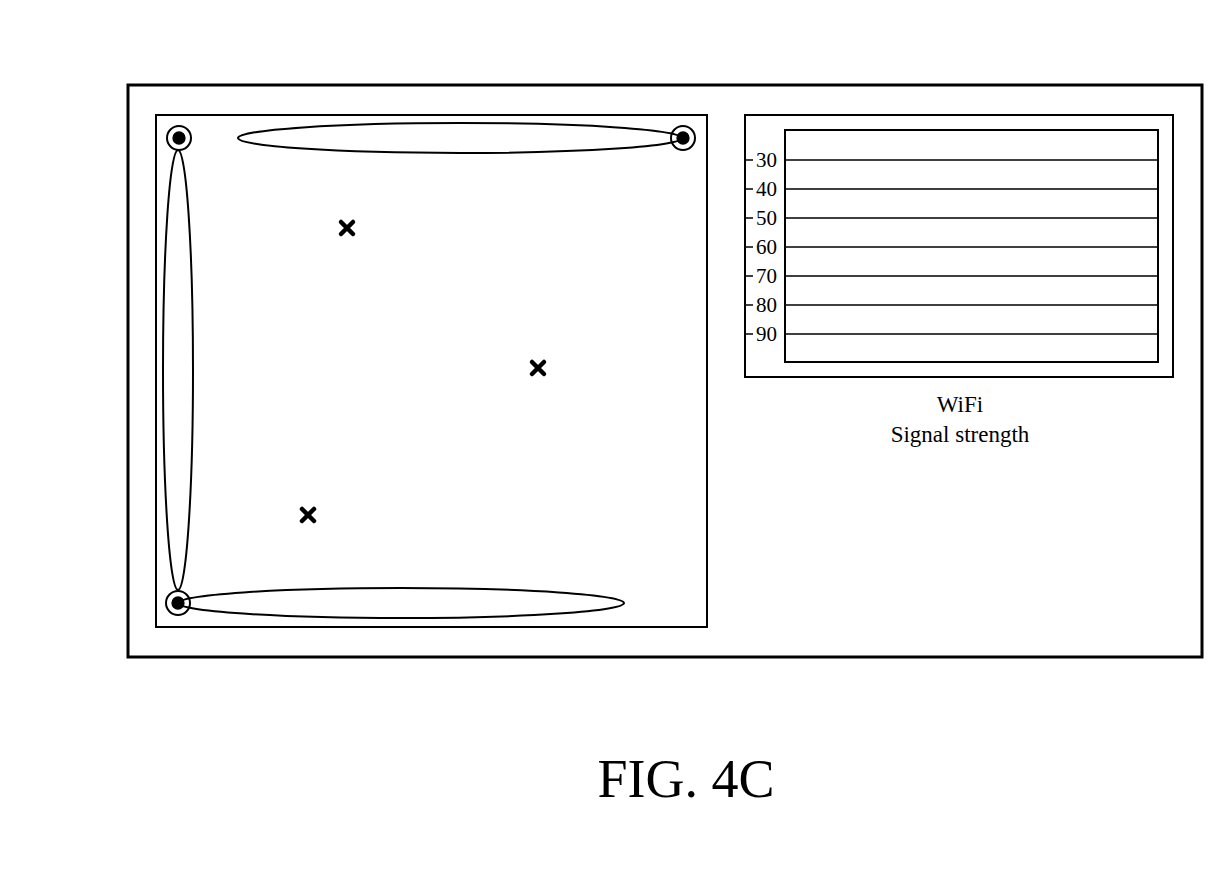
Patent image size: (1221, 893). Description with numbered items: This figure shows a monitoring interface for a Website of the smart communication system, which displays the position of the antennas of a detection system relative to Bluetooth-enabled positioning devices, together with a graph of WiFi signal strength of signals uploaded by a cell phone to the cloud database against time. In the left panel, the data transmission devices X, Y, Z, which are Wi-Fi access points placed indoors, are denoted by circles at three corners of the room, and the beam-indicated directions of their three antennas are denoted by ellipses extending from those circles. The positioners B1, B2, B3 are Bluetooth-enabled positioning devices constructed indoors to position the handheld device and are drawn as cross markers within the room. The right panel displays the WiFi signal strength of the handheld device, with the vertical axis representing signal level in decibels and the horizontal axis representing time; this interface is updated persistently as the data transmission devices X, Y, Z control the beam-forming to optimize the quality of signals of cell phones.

The data transmission device X is at (180, 126).
The data transmission device Y is at (683, 126).
The data transmission device Z is at (166, 603).
The positioner B1 is at (349, 240).
The positioner B2 is at (310, 504).
The positioner B3 is at (540, 356).